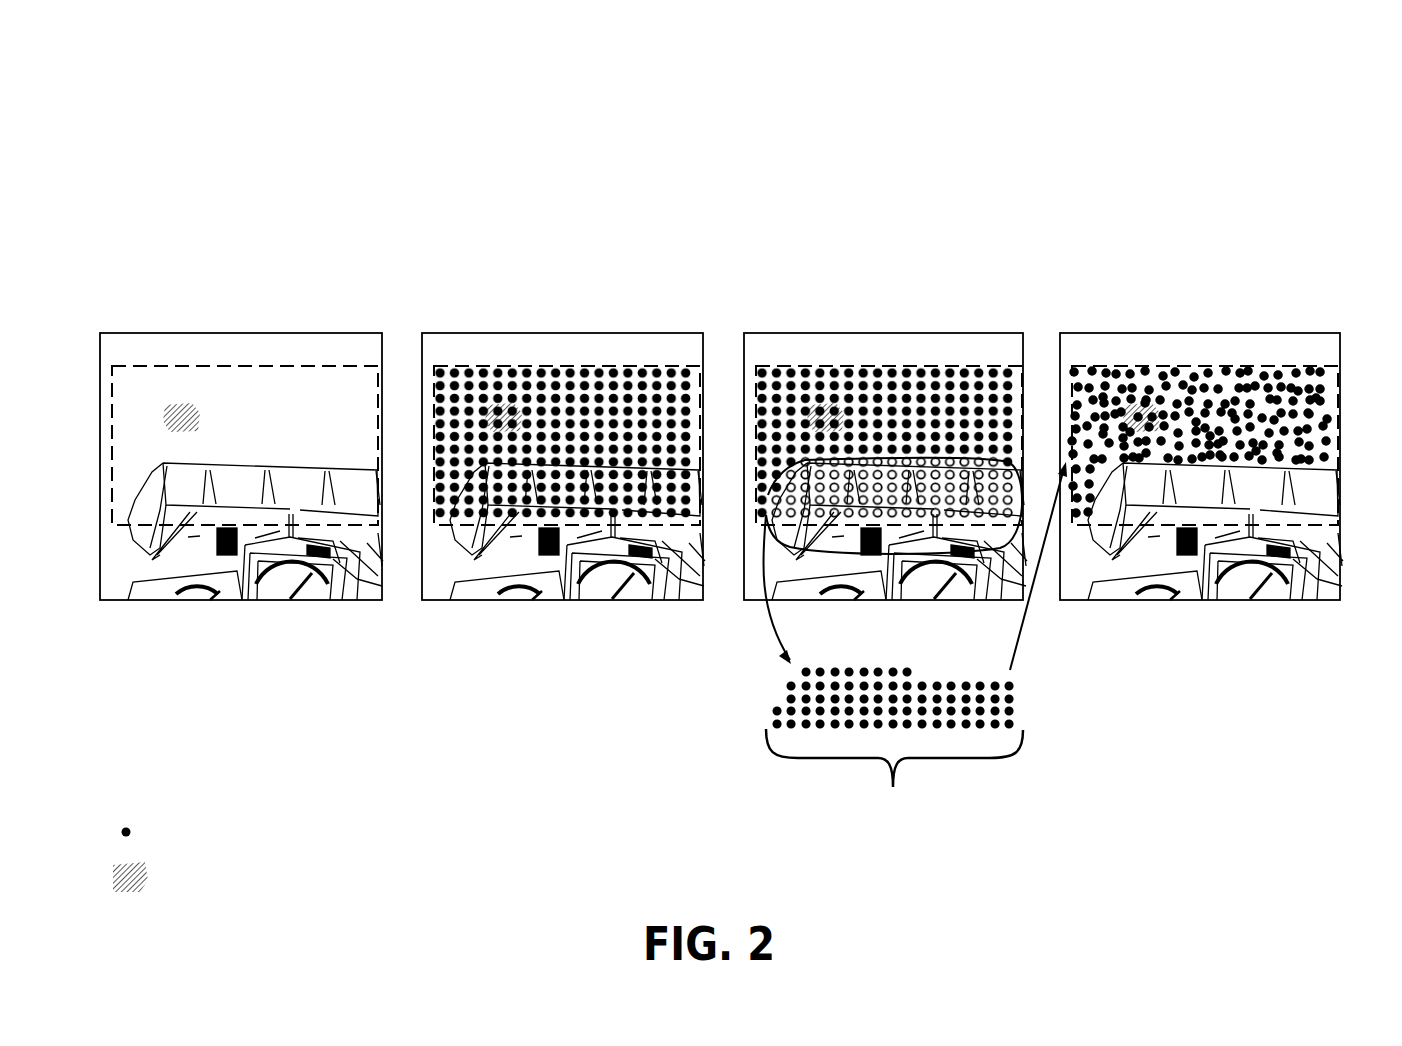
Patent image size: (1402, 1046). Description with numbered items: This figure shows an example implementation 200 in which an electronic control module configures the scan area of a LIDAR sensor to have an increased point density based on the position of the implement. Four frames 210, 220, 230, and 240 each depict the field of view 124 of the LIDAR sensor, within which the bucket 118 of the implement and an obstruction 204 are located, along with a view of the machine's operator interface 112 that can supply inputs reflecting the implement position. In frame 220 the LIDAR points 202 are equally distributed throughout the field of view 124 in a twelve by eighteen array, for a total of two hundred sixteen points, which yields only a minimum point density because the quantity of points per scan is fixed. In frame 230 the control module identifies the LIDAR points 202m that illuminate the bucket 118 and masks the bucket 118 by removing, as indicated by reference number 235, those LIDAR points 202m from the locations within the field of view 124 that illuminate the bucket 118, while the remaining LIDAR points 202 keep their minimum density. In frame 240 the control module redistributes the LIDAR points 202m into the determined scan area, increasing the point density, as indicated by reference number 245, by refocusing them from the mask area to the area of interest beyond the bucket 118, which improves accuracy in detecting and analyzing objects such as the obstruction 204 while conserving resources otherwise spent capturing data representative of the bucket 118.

The example implementation 200 is at (196, 64).
The frame 210 is at (163, 362).
The frame 220 is at (485, 362).
The frame 230 is at (807, 362).
The frame 240 is at (1123, 362).
The field of view 124 is at (347, 382).
The operator interface 112 is at (347, 589).
The bucket 118 is at (262, 501).
The removing of LIDAR points 235 is at (892, 561).
The increasing of point density 245 is at (1040, 566).
The masked LIDAR points 202m is at (894, 746).
The LIDAR points 202 is at (130, 832).
The obstruction 204 is at (150, 877).